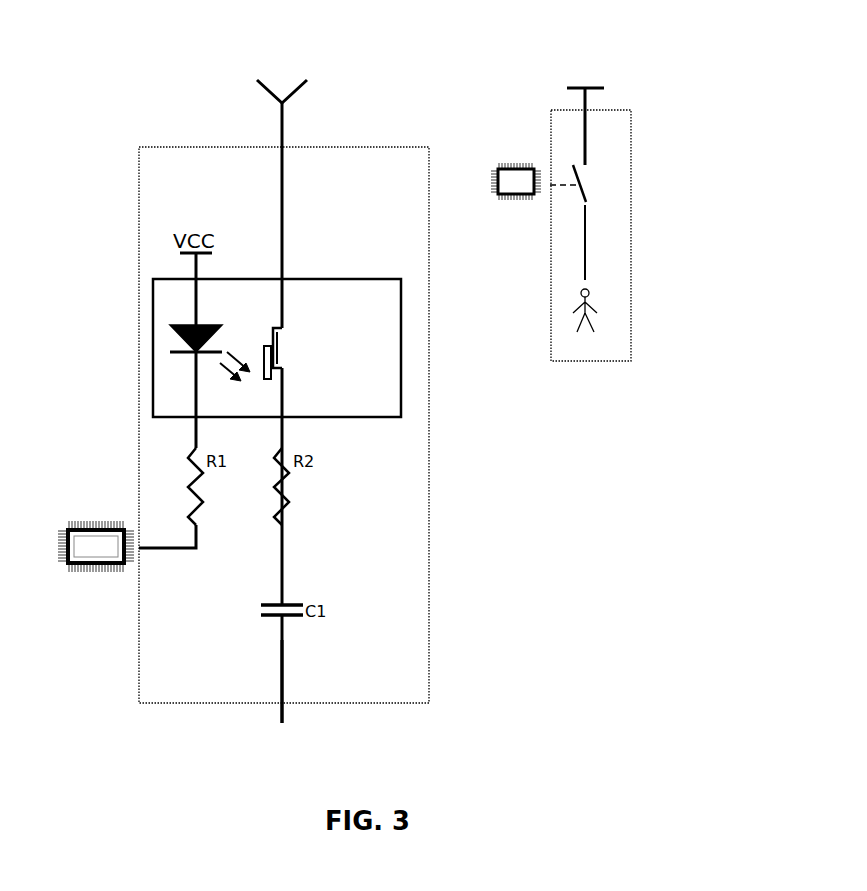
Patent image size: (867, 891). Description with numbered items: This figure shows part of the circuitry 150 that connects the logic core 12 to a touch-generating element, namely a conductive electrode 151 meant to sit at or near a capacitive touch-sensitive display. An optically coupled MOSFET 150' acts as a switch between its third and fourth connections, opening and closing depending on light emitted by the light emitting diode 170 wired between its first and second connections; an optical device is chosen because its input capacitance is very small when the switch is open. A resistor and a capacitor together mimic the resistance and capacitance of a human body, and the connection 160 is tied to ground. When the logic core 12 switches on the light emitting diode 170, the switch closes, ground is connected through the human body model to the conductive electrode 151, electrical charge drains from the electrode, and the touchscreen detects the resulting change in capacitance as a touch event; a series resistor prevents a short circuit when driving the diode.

The logic core 12 is at (93, 522).
The circuitry 150 is at (325, 425).
The optically coupled MOSFET 150' is at (321, 348).
The conductive electrode 151 is at (247, 77).
The connection 160 is at (283, 657).
The light emitting diode 170 is at (166, 337).